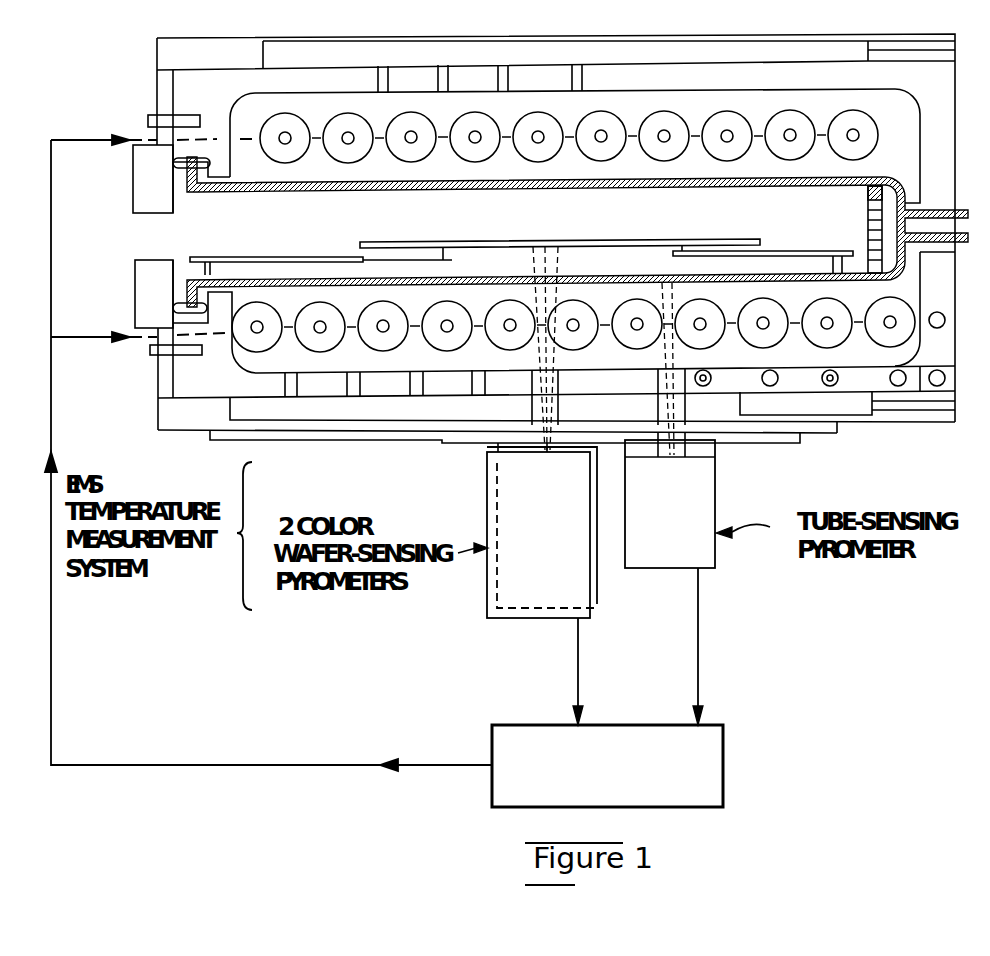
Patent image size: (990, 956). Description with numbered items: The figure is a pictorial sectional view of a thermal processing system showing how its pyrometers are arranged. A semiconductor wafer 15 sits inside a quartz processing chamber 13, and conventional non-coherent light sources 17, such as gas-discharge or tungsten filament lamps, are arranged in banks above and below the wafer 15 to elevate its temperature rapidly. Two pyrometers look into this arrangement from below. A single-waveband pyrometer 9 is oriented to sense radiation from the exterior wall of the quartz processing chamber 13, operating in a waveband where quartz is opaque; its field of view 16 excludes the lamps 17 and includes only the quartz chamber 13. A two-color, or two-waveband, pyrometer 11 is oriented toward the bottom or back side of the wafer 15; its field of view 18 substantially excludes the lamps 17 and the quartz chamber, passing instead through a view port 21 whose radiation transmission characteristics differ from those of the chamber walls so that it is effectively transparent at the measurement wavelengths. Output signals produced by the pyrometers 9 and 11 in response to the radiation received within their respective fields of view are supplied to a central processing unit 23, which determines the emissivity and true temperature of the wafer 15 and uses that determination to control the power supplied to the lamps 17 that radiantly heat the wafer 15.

The single-waveband pyrometer 9 is at (715, 566).
The two-color pyrometer 11 is at (597, 604).
The quartz processing chamber 13 is at (390, 188).
The semiconductor wafer 15 is at (634, 241).
The field of view 16 is at (690, 346).
The non-coherent light sources 17 is at (860, 155).
The field of view 18 is at (530, 256).
The view port 21 is at (558, 277).
The central processing unit 23 is at (722, 728).